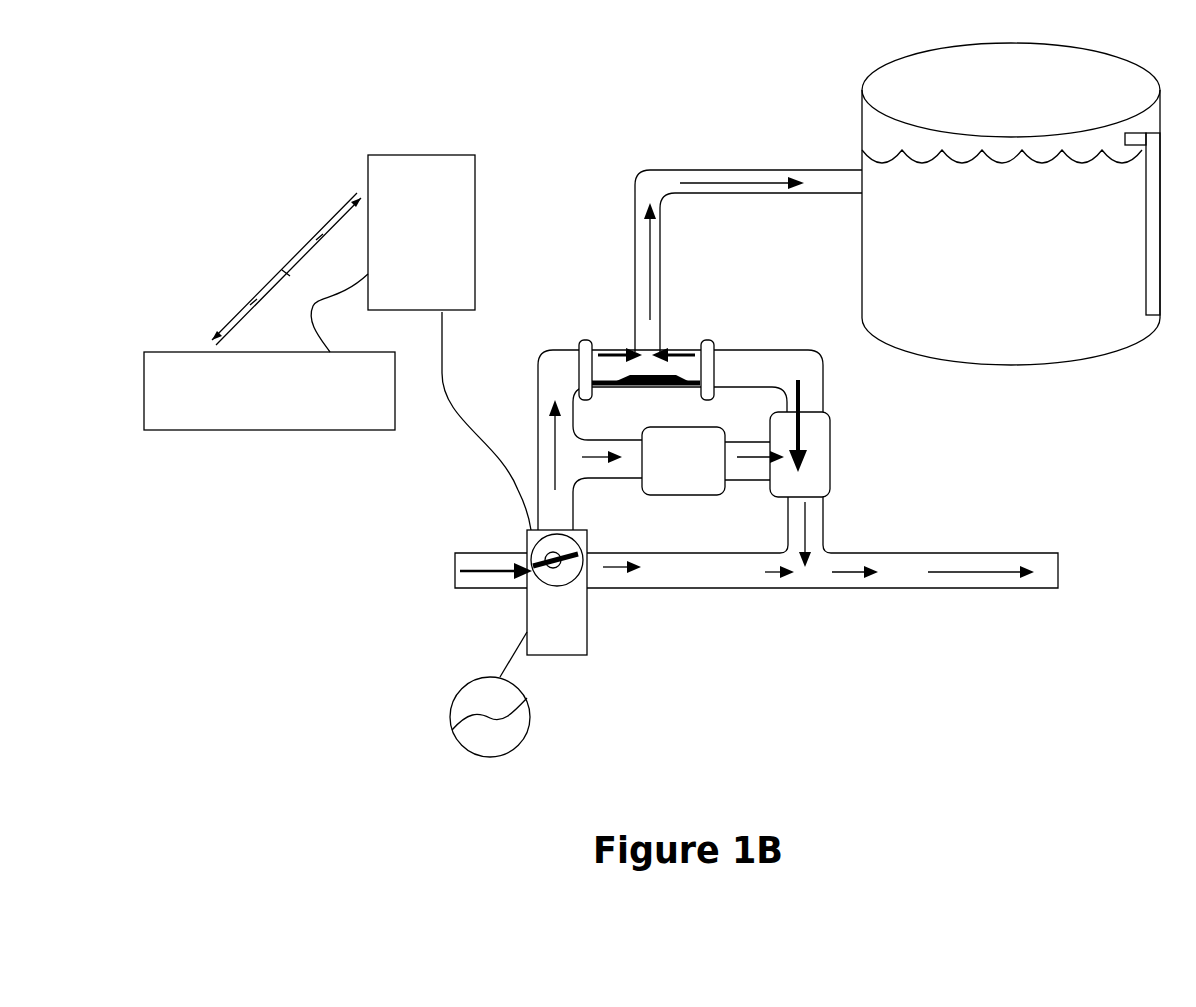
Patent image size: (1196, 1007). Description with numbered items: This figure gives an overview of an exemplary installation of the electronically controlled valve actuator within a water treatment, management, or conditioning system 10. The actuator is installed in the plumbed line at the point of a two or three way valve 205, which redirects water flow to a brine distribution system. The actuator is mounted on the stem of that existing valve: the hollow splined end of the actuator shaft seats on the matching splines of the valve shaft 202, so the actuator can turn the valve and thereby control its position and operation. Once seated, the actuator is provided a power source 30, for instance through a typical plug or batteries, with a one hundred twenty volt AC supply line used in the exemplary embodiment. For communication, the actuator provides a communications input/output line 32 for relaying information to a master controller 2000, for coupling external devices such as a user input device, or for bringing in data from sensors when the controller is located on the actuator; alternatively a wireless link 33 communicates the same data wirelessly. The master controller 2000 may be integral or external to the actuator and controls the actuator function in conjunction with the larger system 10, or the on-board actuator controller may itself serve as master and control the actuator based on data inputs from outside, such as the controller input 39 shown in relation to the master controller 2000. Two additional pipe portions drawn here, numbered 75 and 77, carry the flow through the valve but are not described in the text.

The water treatment, management, or conditioning system 10 is at (552, 292).
The master controller 2000 is at (472, 148).
The wireless link 33 is at (286, 269).
The controller input 39 is at (237, 430).
The communications input/output line 32 is at (486, 421).
The inlet pipe 75 is at (468, 560).
The valve shaft 202 is at (537, 567).
The two or three way valve 205 is at (568, 578).
The power source 30 is at (458, 748).
The outlet pipe 77 is at (1047, 585).